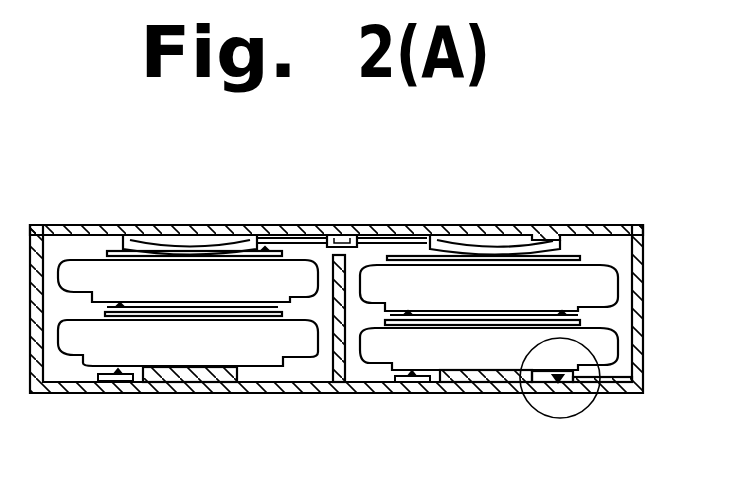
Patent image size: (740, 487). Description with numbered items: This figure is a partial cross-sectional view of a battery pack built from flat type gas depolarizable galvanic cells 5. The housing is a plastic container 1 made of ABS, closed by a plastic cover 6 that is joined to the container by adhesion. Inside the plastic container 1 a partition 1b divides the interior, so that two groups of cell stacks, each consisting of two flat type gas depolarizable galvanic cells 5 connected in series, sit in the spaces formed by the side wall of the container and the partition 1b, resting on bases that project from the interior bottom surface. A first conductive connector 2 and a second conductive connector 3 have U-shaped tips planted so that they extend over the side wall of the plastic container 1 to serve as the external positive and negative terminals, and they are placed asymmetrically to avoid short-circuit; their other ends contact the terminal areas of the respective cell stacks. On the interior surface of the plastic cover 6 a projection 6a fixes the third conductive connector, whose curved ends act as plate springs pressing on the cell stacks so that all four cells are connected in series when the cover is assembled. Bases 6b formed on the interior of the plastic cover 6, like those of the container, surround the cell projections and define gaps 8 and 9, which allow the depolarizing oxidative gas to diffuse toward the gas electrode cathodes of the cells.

The plastic container 1 is at (637, 315).
The partition 1b is at (303, 232).
The first conductive connector 2 is at (410, 383).
The second conductive connector 3 is at (113, 378).
The flat type gas depolarizable galvanic cells 5 is at (634, 364).
The plastic cover 6 is at (590, 228).
The projection 6a is at (339, 247).
The bases 6b is at (175, 230).
The gap 8 is at (297, 371).
The gap 9 is at (371, 250).